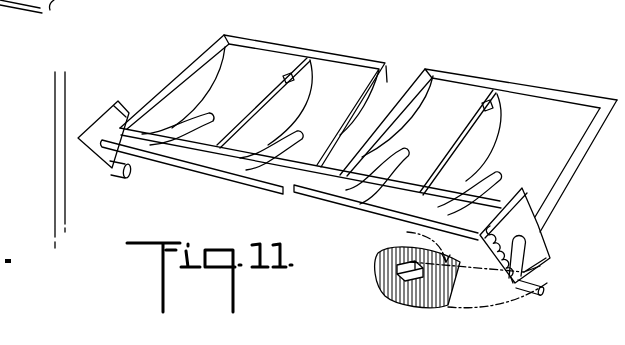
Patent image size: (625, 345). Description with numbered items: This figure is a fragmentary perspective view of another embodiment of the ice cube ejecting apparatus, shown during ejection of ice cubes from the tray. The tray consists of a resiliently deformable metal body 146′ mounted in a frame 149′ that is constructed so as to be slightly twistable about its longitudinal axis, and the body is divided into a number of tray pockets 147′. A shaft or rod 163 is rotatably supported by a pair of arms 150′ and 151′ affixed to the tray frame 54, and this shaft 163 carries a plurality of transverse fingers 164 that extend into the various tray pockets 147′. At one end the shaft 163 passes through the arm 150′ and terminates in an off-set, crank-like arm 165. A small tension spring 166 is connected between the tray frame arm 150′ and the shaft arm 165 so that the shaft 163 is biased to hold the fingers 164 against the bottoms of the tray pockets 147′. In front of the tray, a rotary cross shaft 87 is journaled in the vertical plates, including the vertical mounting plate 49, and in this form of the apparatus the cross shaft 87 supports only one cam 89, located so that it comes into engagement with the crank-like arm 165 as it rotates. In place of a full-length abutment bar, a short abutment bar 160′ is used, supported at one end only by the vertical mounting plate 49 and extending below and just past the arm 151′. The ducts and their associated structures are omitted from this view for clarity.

The tray frame 54 is at (40, 14).
The vertical plate 49 is at (58, 138).
The resiliently deformable metal body 146′ is at (339, 53).
The tray pockets 147′ is at (555, 135).
The frame 149′ is at (573, 186).
The transverse fingers 164 is at (297, 133).
The shaft 163 is at (330, 197).
The arm 151′ is at (88, 140).
The short abutment bar 160′ is at (112, 168).
The arm 150′ is at (524, 272).
The crank-like arm 165 is at (533, 296).
The tension spring 166 is at (497, 258).
The cam 89 is at (386, 284).
The cross shaft 87 is at (410, 283).